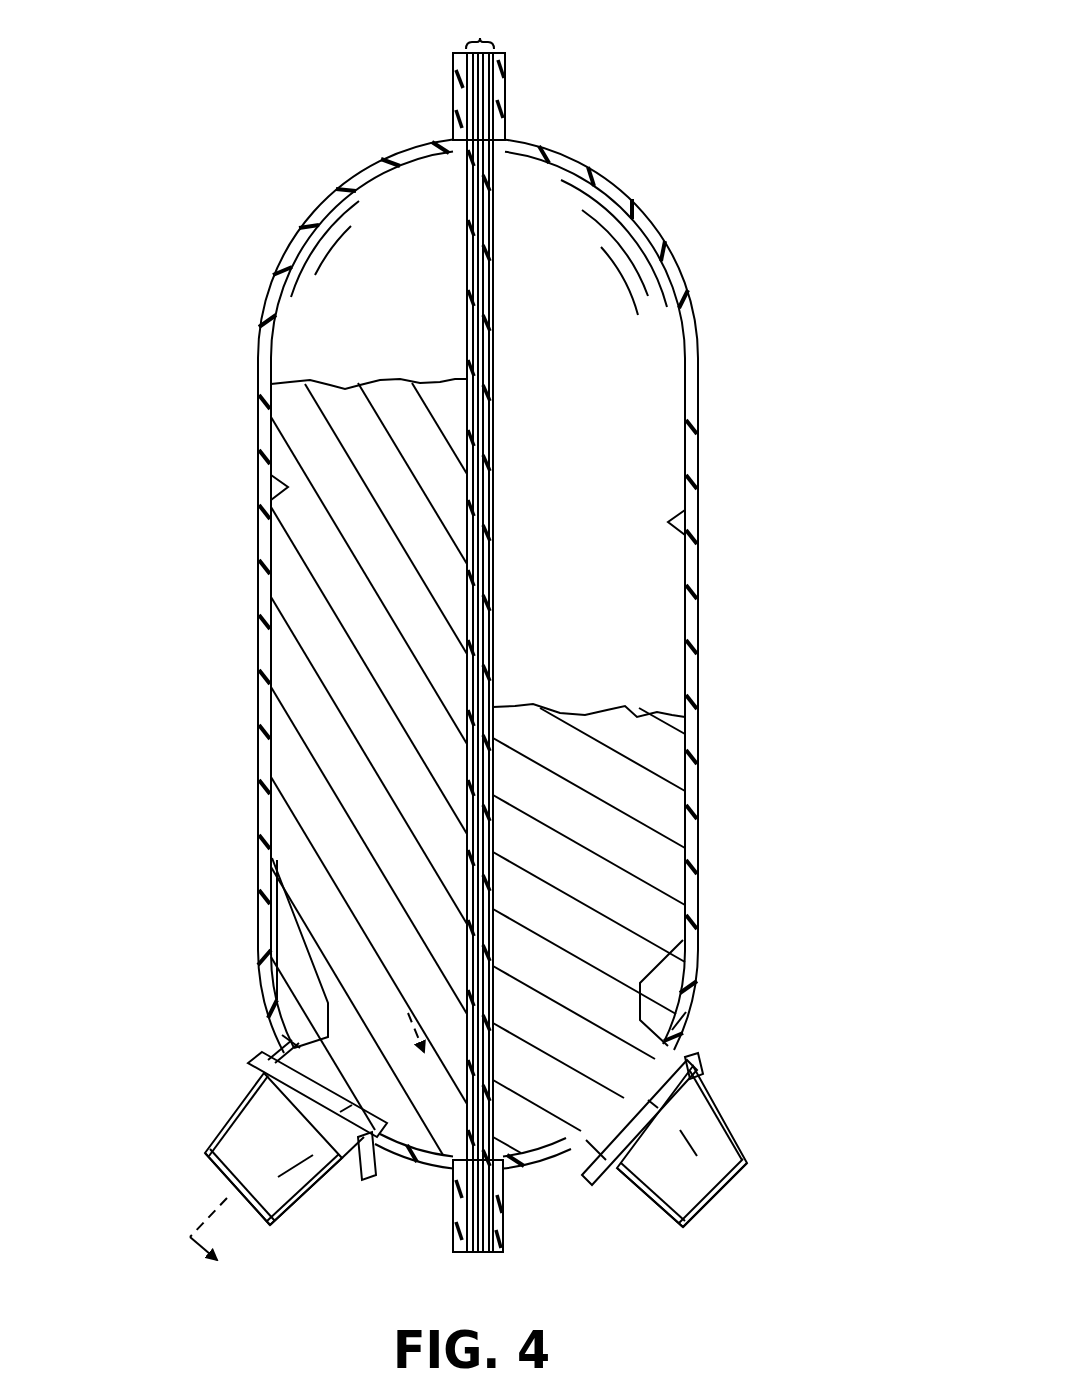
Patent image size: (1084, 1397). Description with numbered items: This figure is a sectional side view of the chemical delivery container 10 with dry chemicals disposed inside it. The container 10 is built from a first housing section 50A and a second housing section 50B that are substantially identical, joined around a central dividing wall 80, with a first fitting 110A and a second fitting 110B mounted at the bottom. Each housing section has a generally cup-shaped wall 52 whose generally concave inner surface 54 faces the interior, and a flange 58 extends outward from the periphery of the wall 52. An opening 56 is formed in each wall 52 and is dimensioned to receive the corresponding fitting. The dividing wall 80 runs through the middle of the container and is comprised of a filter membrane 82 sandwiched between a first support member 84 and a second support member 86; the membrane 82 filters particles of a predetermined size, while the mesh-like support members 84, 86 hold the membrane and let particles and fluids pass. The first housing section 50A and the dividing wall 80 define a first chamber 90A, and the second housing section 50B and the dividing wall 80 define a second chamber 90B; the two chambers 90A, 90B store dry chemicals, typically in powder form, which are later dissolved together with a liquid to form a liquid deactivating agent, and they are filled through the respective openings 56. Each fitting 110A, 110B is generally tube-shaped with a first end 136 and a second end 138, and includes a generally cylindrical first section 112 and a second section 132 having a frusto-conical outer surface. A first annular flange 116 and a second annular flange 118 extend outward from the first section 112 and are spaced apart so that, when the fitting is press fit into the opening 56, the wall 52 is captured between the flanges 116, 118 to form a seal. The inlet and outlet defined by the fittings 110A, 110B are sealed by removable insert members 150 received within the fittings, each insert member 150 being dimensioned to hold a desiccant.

The chemical delivery container 10 is at (740, 117).
The first housing section 50A is at (254, 316).
The second housing section 50B is at (706, 355).
The wall 52 is at (258, 572).
The inner surface 54 is at (288, 487).
The opening 56 is at (367, 1180).
The flange 58 is at (455, 102).
The dividing wall 80 is at (475, 627).
The filter membrane 82 is at (479, 258).
The first support member 84 is at (468, 289).
The second support member 86 is at (490, 305).
The first chamber 90A is at (330, 322).
The second chamber 90B is at (630, 437).
The first fitting 110A is at (220, 1101).
The second fitting 110B is at (732, 1118).
The first section 112 is at (275, 1058).
The first annular flange 116 is at (285, 1033).
The second annular flange 118 is at (253, 1058).
The second section 132 is at (298, 1207).
The first end 136 is at (227, 1180).
The second end 138 is at (272, 920).
The insert member 150 is at (203, 1158).